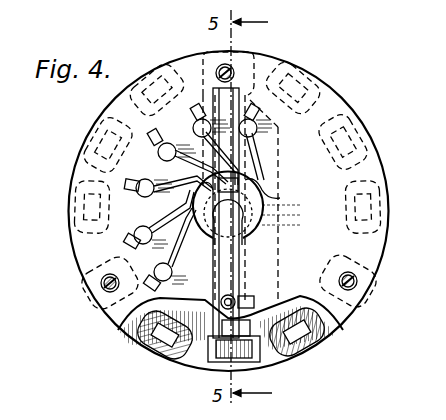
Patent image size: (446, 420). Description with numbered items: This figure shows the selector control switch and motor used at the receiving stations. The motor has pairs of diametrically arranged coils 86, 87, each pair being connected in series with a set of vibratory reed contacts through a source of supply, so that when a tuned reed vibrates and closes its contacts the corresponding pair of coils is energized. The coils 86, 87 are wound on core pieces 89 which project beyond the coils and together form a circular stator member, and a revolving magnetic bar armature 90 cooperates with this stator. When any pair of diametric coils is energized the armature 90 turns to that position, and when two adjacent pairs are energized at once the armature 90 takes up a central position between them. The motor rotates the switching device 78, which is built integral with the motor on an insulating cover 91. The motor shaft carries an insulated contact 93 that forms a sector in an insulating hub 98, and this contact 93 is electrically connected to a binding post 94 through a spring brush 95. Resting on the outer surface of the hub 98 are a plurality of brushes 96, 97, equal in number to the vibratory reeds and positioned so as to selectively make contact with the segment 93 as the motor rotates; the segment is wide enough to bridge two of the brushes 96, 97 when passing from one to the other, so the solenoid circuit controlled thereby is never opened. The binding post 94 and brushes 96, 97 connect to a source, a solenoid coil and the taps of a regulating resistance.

The switching device 78 is at (162, 224).
The coils 86 is at (154, 70).
The coils 87 is at (246, 55).
The core pieces 89 is at (196, 366).
The revolving magnetic bar armature 90 is at (221, 327).
The insulating cover 91 is at (260, 197).
The insulated contact 93 is at (270, 196).
The binding post 94 is at (221, 299).
The spring brush 95 is at (238, 268).
The brush 96 is at (182, 166).
The brush 97 is at (205, 141).
The insulating hub 98 is at (264, 217).